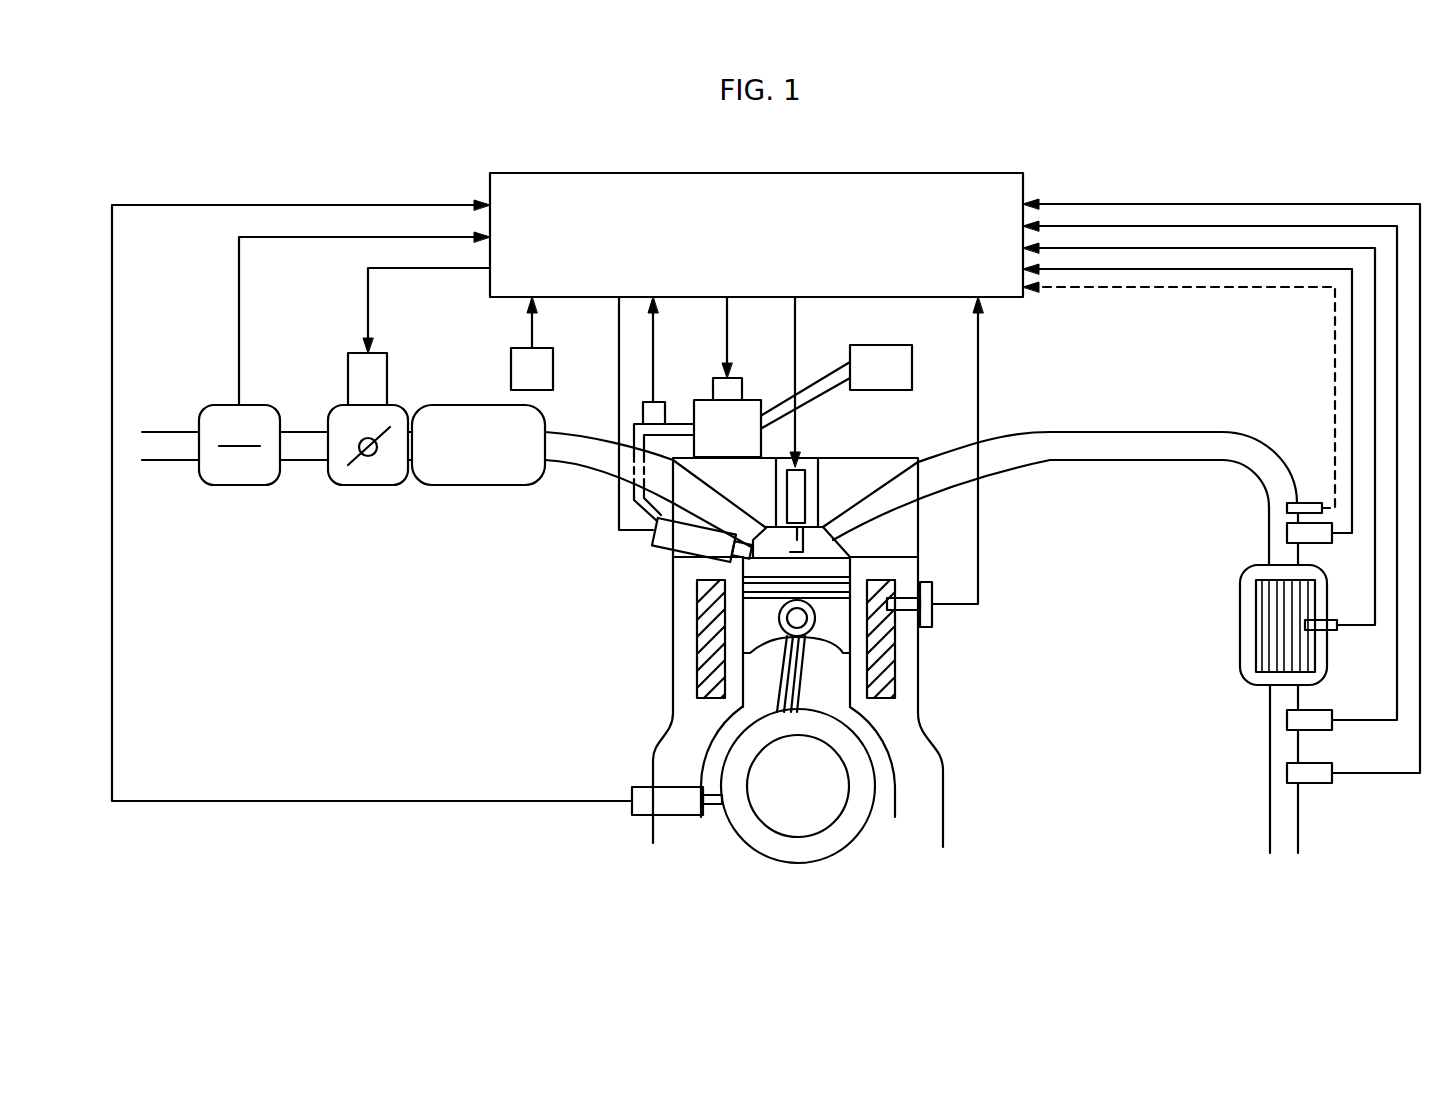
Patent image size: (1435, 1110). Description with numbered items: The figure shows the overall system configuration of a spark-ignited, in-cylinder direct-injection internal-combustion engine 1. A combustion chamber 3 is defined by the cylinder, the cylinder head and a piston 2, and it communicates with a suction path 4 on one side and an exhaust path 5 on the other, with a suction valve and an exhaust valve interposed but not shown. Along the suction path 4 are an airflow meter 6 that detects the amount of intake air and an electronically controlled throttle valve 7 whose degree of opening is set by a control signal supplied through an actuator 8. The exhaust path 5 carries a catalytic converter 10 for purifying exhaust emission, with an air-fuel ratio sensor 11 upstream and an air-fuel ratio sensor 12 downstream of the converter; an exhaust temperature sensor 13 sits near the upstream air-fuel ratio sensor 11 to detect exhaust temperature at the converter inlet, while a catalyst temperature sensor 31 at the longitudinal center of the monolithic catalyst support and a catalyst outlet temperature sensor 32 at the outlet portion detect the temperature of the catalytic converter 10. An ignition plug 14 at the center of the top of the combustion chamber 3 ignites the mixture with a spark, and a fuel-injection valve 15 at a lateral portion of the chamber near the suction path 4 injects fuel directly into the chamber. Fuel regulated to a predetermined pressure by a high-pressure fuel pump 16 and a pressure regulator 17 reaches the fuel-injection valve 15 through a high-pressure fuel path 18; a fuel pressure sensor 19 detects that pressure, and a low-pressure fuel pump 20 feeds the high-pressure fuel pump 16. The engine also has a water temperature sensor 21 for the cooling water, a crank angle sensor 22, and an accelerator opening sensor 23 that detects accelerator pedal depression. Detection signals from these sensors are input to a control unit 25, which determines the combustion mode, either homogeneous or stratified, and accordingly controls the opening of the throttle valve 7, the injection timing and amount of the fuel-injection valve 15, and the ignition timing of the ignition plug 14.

The internal-combustion engine 1 is at (659, 688).
The piston 2 is at (837, 625).
The combustion chamber 3 is at (838, 545).
The suction path 4 is at (168, 461).
The exhaust path 5 is at (1118, 432).
The airflow meter 6 is at (252, 486).
The electronically controlled throttle valve 7 is at (352, 463).
The actuator 8 is at (348, 378).
The catalytic converter 10 is at (1240, 606).
The air-fuel ratio sensor 11 is at (1287, 533).
The air-fuel ratio sensor 12 is at (1320, 783).
The exhaust temperature sensor 13 is at (1298, 503).
The ignition plug 14 is at (808, 485).
The fuel-injection valve 15 is at (668, 545).
The high-pressure fuel pump 16 is at (755, 400).
The pressure regulator 17 is at (718, 378).
The high-pressure fuel path 18 is at (634, 508).
The fuel pressure sensor 19 is at (655, 402).
The low-pressure fuel pump 20 is at (912, 357).
The water temperature sensor 21 is at (933, 618).
The crank angle sensor 22 is at (638, 787).
The accelerator opening sensor 23 is at (511, 367).
The control unit 25 is at (950, 173).
The catalyst temperature sensor 31 is at (1325, 632).
The catalyst outlet temperature sensor 32 is at (1287, 718).